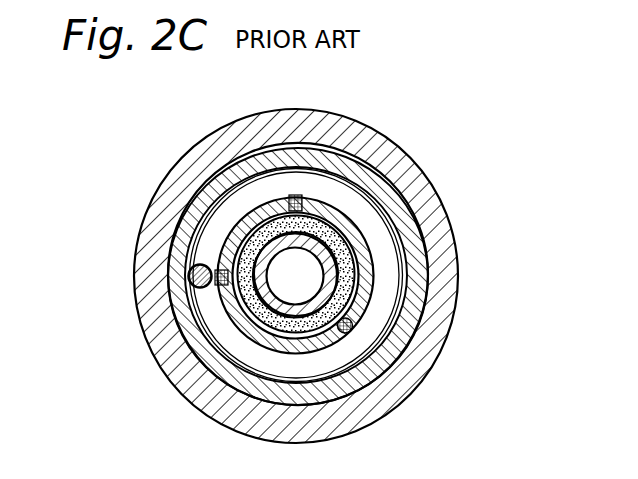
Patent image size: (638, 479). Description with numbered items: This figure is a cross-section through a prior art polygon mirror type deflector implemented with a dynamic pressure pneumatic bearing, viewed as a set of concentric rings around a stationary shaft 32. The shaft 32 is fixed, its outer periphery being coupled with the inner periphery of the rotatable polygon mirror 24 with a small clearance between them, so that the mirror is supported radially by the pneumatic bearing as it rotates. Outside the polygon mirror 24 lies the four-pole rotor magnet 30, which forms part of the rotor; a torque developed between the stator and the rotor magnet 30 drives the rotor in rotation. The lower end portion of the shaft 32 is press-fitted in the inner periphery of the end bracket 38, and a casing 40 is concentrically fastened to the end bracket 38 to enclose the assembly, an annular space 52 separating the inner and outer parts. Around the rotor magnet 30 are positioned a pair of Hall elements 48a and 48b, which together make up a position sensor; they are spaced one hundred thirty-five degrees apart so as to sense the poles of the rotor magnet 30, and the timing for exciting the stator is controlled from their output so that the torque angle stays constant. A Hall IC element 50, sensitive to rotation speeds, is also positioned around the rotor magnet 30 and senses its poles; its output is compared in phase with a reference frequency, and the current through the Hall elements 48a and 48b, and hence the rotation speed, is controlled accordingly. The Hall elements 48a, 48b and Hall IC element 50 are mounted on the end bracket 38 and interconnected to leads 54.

The rotor magnet 30 is at (200, 191).
The casing 40 is at (415, 175).
The end bracket 38 is at (440, 211).
The annular space 52 is at (388, 260).
The polygon mirror 24 is at (240, 222).
The leads 54 is at (188, 280).
The stationary shaft 32 is at (275, 287).
The Hall IC element 50 is at (298, 196).
The Hall element 48a is at (260, 261).
The Hall element 48b is at (355, 330).